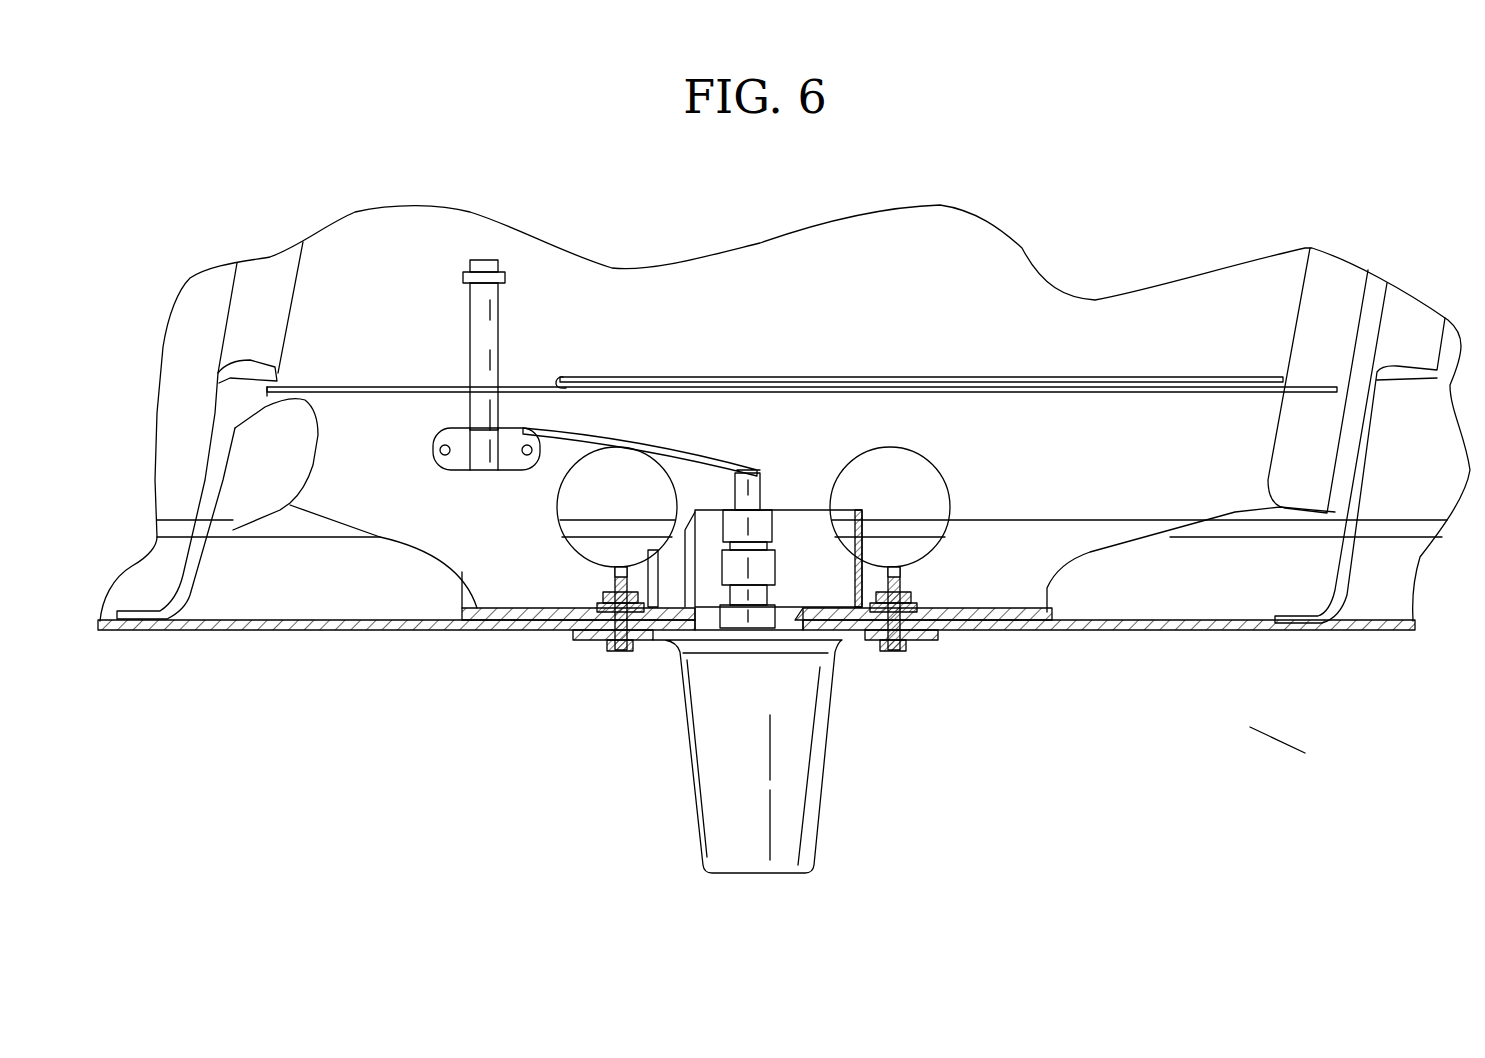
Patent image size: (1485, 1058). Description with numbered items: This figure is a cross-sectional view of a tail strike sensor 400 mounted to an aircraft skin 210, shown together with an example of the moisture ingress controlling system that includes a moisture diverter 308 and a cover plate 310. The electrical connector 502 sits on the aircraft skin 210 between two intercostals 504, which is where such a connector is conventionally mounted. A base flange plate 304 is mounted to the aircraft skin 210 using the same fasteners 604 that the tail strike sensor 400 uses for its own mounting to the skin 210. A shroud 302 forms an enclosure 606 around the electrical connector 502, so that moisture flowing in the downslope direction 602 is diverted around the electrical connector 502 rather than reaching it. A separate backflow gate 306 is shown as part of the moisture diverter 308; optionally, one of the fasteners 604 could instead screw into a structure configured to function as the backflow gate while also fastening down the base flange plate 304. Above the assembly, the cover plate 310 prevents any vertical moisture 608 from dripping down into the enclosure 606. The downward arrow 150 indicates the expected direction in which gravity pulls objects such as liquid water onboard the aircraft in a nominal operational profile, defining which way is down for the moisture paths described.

The downward arrow 150 is at (1278, 740).
The aircraft skin 210 is at (296, 635).
The shroud 302 is at (700, 508).
The base flange plate 304 is at (600, 600).
The backflow gate 306 is at (650, 552).
The moisture diverter 308 is at (880, 523).
The cover plate 310 is at (1218, 378).
The tail strike sensor 400 is at (790, 848).
The electrical connector 502 is at (760, 485).
The intercostals 504 is at (398, 400).
The downslope direction 602 is at (1075, 658).
The fasteners 604 is at (620, 655).
The enclosure 606 is at (800, 520).
The vertical moisture 608 is at (785, 414).